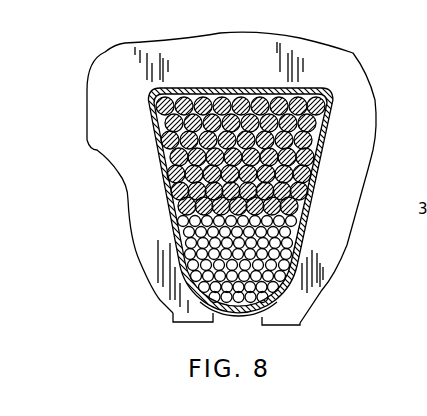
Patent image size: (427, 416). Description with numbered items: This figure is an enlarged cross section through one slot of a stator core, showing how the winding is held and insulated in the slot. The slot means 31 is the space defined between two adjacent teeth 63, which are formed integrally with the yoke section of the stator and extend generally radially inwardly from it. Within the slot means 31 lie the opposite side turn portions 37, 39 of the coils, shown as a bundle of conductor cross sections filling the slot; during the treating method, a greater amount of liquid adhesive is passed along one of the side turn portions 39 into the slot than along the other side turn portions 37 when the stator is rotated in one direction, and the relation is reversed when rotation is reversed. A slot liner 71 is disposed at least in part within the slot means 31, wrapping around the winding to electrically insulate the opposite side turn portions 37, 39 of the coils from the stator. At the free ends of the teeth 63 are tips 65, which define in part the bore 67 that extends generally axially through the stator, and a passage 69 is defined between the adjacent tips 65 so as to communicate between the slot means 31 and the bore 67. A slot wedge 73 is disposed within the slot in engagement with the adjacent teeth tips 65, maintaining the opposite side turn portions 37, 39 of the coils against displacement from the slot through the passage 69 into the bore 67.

The slot means 31 is at (185, 177).
The slot liner 71 is at (148, 143).
The opposite side turn portion 37 is at (160, 200).
The opposite side turn portion 39 is at (100, 212).
The teeth 63 is at (140, 244).
The tips 65 is at (230, 295).
The bore 67 is at (188, 328).
The passages 69 is at (256, 316).
The slot wedge 73 is at (240, 319).